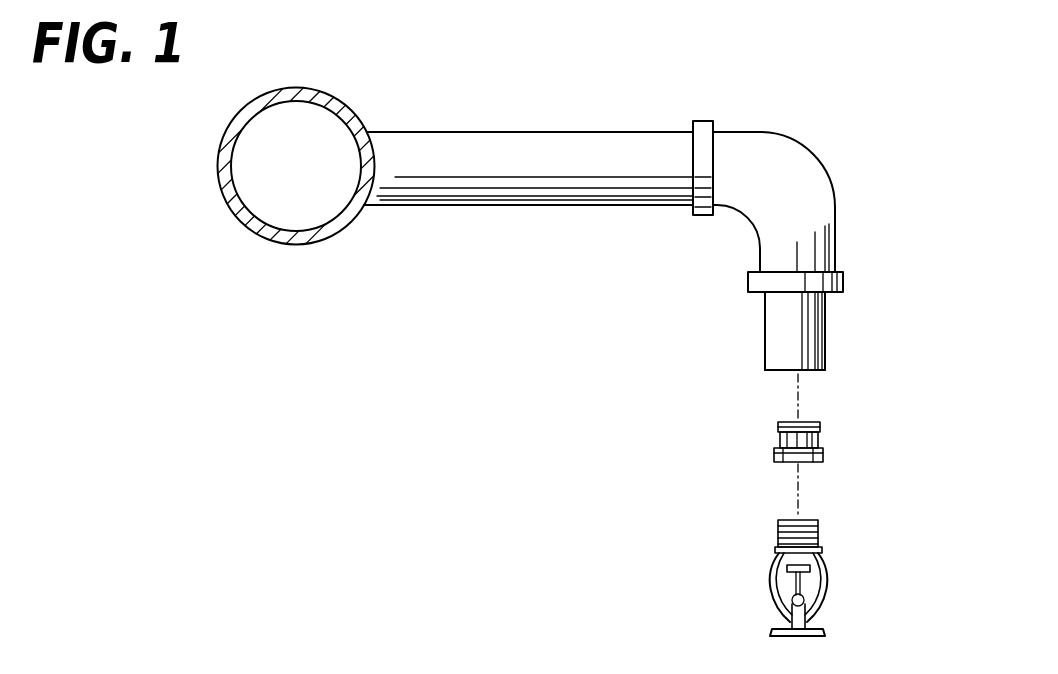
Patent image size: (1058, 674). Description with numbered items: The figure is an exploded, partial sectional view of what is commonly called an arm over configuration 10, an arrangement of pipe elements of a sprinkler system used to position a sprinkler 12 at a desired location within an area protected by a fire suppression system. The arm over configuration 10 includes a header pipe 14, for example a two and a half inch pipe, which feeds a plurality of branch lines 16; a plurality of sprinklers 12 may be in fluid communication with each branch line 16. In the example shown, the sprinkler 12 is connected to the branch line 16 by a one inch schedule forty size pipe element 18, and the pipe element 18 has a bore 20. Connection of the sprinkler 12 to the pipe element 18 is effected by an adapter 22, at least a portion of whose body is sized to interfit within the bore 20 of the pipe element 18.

The arm over configuration 10 is at (505, 267).
The sprinkler 12 is at (830, 590).
The header pipe 14 is at (266, 243).
The branch line 16 is at (525, 138).
The pipe element 18 is at (765, 343).
The bore 20 is at (803, 372).
The adapter 22 is at (823, 444).